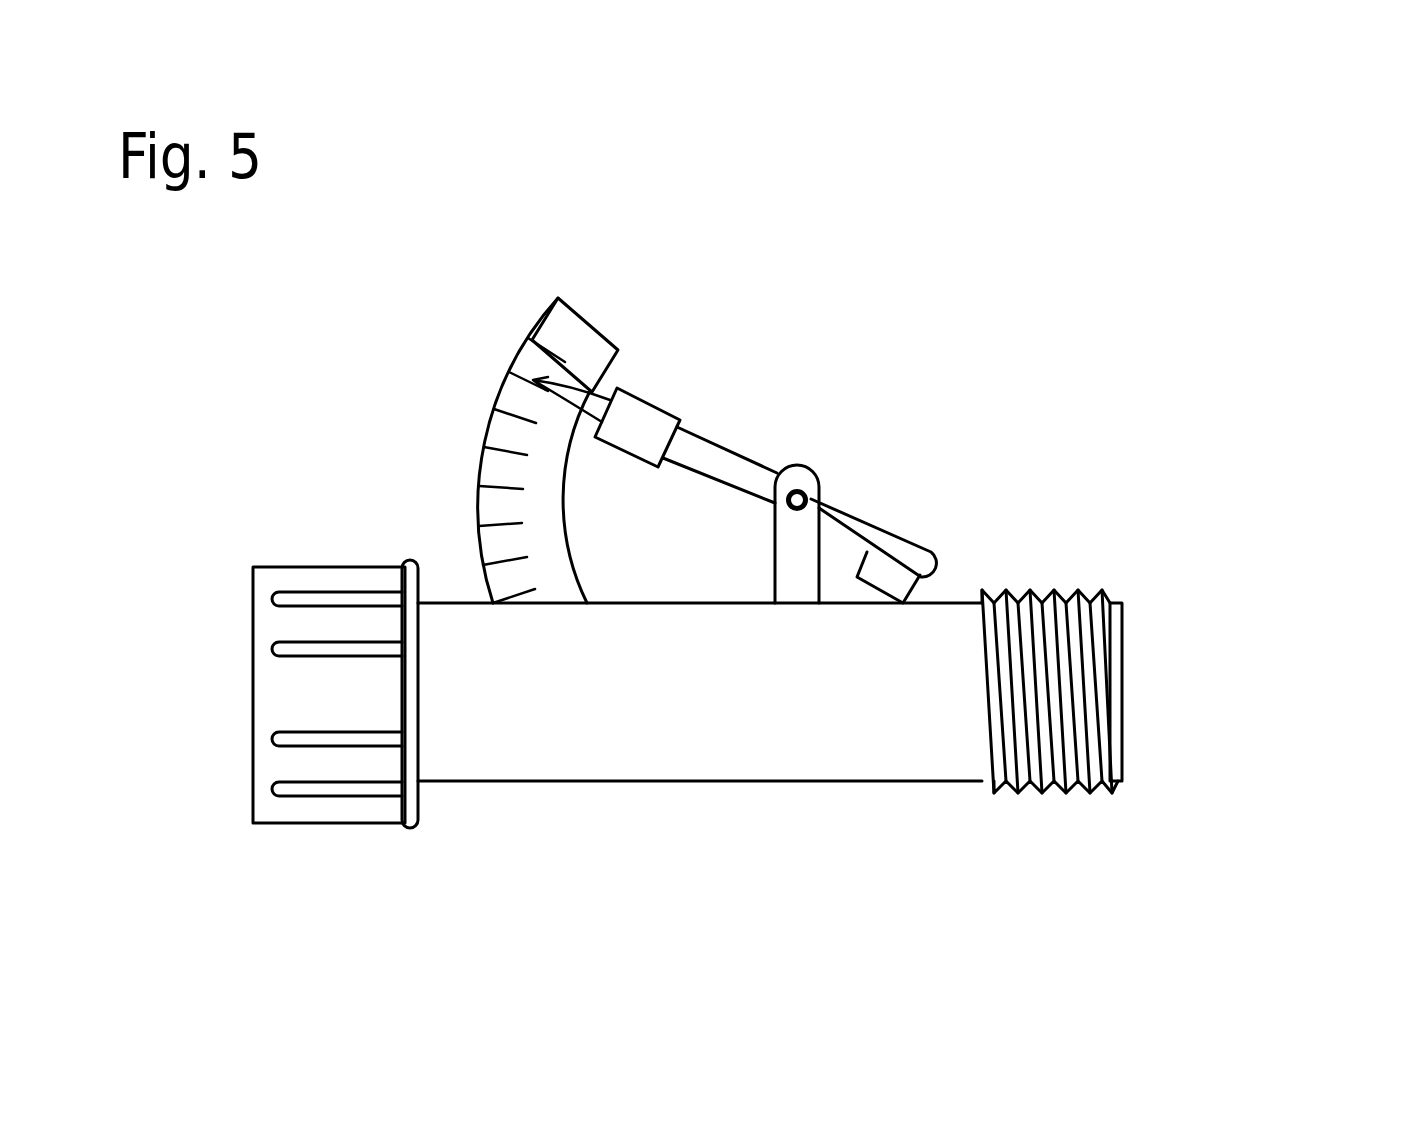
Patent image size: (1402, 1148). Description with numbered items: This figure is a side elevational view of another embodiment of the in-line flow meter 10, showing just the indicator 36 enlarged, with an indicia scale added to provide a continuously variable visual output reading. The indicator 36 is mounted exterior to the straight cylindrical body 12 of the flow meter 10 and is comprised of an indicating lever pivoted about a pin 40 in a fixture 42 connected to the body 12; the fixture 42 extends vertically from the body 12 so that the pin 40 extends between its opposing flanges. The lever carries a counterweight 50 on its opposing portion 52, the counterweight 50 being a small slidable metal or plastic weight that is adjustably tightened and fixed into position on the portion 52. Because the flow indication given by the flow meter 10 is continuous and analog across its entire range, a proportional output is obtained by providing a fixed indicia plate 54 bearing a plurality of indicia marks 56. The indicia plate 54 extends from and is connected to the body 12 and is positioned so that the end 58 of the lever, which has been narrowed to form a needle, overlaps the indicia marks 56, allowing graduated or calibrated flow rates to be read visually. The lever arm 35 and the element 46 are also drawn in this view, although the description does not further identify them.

The in-line flow meter 10 is at (1142, 345).
The cylindrical body 12 is at (930, 782).
The lever arm 35 is at (850, 525).
The indicator 36 is at (857, 333).
The pin 40 is at (795, 502).
The fixture 42 is at (812, 473).
The pad 46 is at (882, 580).
The counterweight 50 is at (642, 417).
The opposing portion 52 is at (702, 453).
The indicia plate 54 is at (582, 327).
The indicia marks 56 is at (497, 523).
The end 58 is at (550, 382).